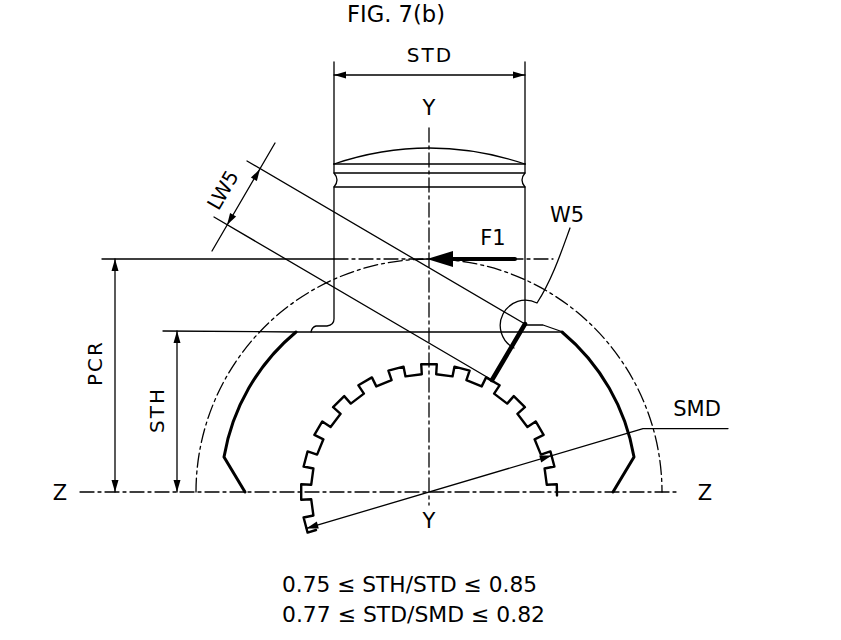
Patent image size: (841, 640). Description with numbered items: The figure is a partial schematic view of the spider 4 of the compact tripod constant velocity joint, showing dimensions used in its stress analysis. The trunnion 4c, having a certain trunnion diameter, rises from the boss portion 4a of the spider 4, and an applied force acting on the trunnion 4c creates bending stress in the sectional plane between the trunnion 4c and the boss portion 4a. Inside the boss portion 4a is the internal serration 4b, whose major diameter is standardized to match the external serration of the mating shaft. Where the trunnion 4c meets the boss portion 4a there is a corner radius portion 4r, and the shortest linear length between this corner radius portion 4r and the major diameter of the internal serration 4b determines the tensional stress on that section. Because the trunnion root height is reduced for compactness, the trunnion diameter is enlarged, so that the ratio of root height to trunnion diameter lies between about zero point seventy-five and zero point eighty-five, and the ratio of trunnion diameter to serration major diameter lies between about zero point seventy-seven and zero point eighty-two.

The spider 4 is at (485, 212).
The boss portion 4a is at (523, 372).
The internal serration 4b is at (527, 410).
The trunnion 4c is at (367, 203).
The corner radius portion 4r is at (537, 303).